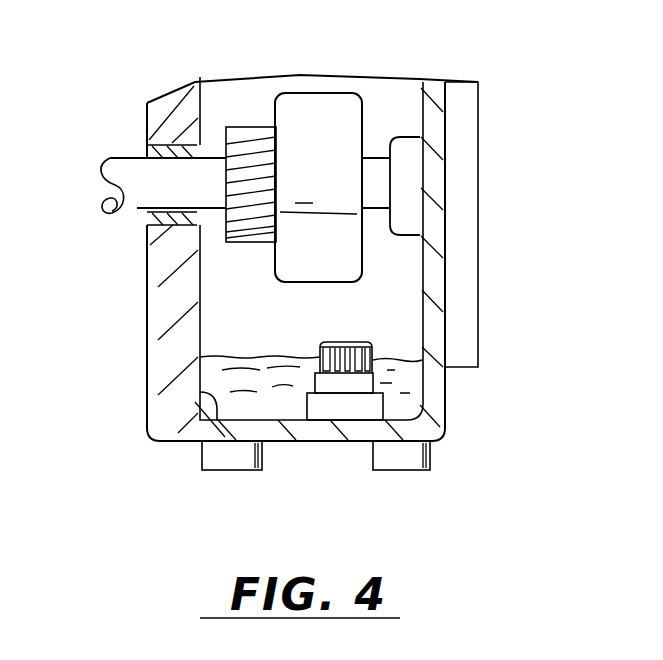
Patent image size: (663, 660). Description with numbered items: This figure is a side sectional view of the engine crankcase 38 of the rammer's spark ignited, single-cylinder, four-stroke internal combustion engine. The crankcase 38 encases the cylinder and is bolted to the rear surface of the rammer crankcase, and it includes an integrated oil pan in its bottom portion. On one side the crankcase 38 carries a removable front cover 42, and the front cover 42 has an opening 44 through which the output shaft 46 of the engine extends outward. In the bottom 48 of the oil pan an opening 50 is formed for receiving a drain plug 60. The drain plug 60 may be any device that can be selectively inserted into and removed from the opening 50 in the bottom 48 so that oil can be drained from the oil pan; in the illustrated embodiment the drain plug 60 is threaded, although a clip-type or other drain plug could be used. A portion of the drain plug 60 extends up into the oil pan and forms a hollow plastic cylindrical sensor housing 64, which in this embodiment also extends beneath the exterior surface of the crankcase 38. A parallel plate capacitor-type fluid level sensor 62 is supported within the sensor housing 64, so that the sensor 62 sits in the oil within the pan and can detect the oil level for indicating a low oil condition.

The crankcase 38 is at (434, 56).
The removable front cover 42 is at (160, 323).
The opening 44 is at (163, 167).
The output shaft 46 is at (135, 207).
The bottom 48 is at (262, 423).
The opening 50 is at (304, 441).
The drain plug 60 is at (383, 404).
The fluid level sensor 62 is at (324, 346).
The sensor housing 64 is at (375, 384).